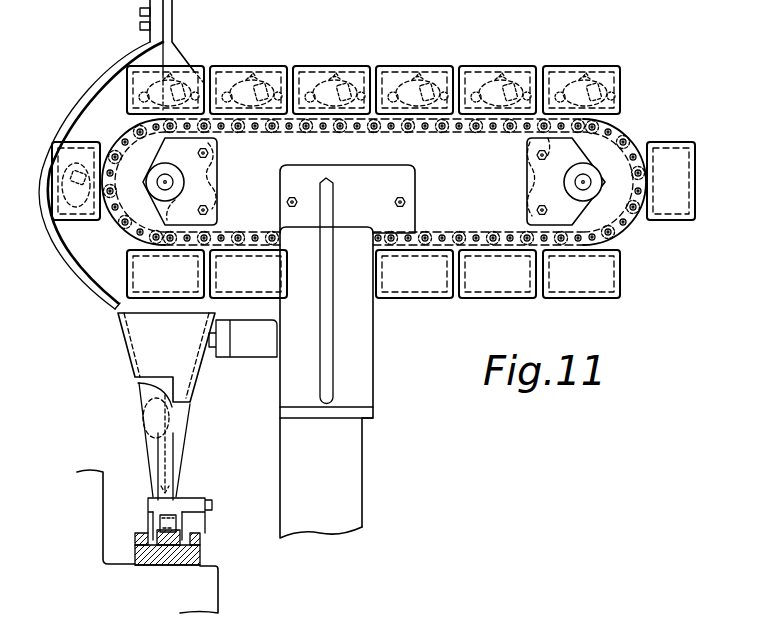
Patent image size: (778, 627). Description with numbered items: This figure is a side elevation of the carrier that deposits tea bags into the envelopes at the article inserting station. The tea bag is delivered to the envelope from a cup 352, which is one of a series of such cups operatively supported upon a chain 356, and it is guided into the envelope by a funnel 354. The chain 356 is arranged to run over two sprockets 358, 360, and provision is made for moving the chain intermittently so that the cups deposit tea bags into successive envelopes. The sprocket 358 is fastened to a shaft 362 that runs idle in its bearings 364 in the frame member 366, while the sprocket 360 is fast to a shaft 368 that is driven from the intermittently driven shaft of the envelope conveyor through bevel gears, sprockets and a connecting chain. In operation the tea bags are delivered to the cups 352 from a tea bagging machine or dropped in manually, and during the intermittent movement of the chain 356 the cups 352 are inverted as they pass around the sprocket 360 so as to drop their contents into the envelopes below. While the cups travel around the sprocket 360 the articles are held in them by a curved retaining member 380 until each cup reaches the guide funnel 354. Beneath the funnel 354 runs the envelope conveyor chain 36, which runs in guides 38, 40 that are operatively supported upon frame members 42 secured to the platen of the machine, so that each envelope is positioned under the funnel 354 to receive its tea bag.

The cup 352 is at (197, 66).
The funnel 354 is at (127, 352).
The chain 356 is at (622, 120).
The sprocket 358 is at (527, 183).
The sprocket 360 is at (211, 153).
The shaft 362 is at (584, 181).
The bearings 364 is at (592, 197).
The frame member 366 is at (527, 218).
The shaft 368 is at (165, 182).
The curved retaining member 380 is at (68, 267).
The conveyor chain 36 is at (195, 518).
The guide 38 is at (135, 547).
The guide 40 is at (200, 548).
The frame members 42 is at (172, 565).